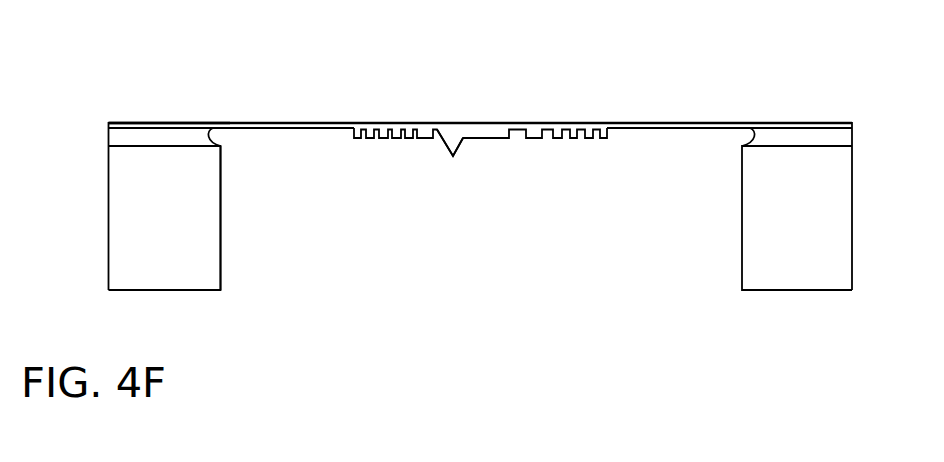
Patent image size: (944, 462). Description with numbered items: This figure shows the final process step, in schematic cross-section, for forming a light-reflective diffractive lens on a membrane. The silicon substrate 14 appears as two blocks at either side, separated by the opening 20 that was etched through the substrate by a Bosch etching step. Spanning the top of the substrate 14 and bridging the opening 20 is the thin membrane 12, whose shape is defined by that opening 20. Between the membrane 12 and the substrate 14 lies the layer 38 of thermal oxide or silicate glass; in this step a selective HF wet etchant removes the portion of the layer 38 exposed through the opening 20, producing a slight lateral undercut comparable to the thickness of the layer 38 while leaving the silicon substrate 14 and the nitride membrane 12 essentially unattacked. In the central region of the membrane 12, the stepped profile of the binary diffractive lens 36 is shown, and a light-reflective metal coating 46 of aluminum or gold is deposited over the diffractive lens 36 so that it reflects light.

The membrane 12 is at (278, 123).
The silicon substrate 14 is at (147, 256).
The opening 20 is at (222, 199).
The diffractive lens 36 is at (564, 147).
The layer 38 is at (108, 136).
The light-reflective metal coating 46 is at (452, 155).